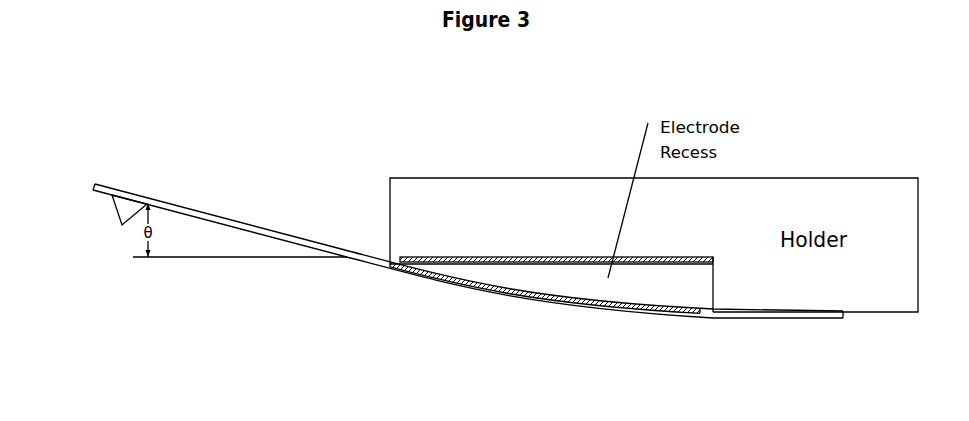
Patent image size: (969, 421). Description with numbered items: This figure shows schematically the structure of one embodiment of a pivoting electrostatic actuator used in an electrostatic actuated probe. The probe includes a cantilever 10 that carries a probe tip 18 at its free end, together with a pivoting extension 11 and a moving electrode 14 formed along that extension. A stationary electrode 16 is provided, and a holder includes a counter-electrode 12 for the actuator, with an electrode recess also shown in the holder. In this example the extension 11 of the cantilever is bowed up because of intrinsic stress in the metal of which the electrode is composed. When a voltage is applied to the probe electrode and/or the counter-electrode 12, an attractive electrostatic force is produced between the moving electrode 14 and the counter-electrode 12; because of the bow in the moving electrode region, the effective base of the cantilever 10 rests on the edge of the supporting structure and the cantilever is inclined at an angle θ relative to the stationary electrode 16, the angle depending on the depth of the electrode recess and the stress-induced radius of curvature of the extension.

The cantilever 10 is at (217, 210).
The pivoting extension 11 is at (477, 293).
The counter-electrode 12 is at (440, 256).
The moving electrode 14 is at (572, 301).
The stationary electrode 16 is at (673, 263).
The probe tip 18 is at (112, 218).